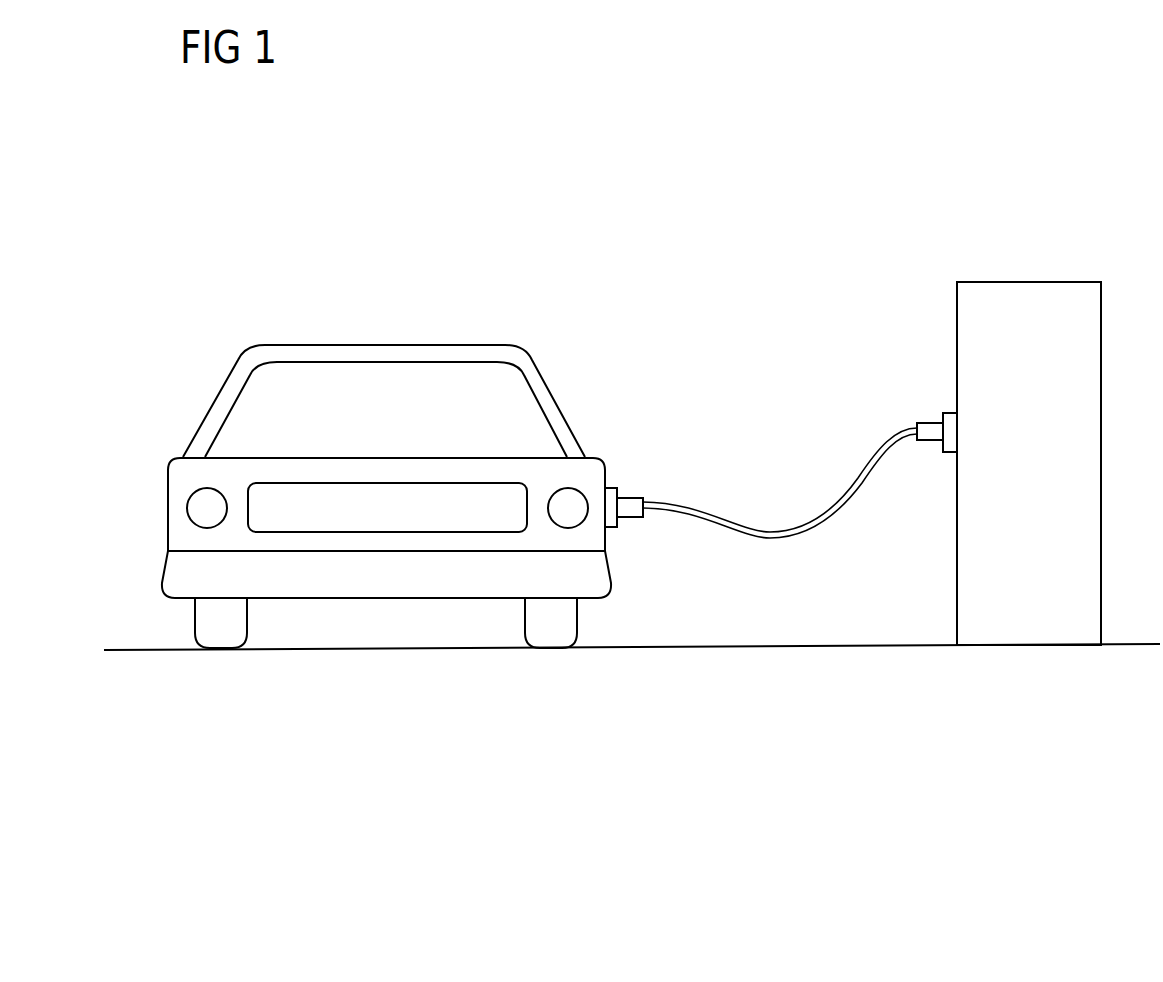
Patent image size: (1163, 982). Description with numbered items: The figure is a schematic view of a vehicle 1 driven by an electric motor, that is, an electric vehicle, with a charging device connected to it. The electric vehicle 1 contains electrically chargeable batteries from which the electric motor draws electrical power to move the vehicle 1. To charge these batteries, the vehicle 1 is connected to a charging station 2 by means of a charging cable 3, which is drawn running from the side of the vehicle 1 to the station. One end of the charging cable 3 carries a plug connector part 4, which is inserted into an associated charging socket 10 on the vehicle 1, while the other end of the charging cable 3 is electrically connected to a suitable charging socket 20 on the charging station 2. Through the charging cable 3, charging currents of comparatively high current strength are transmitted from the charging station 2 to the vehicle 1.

The vehicle 1 is at (512, 307).
The charging station 2 is at (1047, 252).
The charging cable 3 is at (780, 502).
The plug connector part 4 is at (640, 507).
The charging socket 10 is at (611, 488).
The charging socket 20 is at (953, 453).